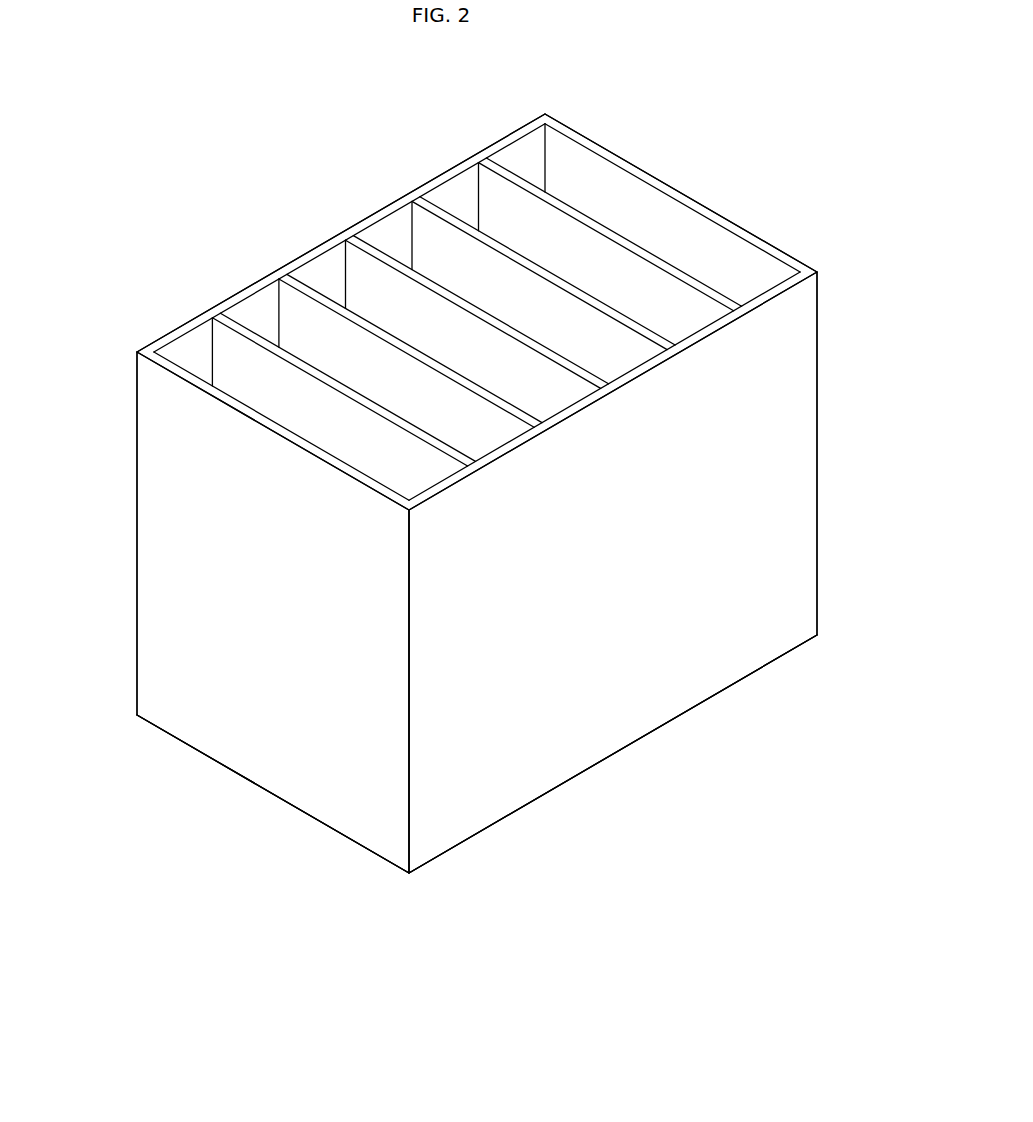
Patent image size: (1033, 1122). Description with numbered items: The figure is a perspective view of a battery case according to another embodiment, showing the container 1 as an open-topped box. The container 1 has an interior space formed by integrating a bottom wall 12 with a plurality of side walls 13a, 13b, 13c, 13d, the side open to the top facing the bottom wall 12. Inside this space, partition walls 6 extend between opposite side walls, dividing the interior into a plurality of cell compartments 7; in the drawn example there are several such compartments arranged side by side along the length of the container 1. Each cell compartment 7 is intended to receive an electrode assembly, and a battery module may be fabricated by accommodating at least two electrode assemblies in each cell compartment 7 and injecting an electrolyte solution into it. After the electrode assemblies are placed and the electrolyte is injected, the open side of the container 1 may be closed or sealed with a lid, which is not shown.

The container 1 is at (142, 483).
The partition wall 6 is at (583, 212).
The cell compartment 7 is at (257, 302).
The bottom wall 12 is at (358, 845).
The side wall 13a is at (642, 718).
The side wall 13b is at (170, 333).
The side wall 13c is at (722, 217).
The side wall 13d is at (240, 752).